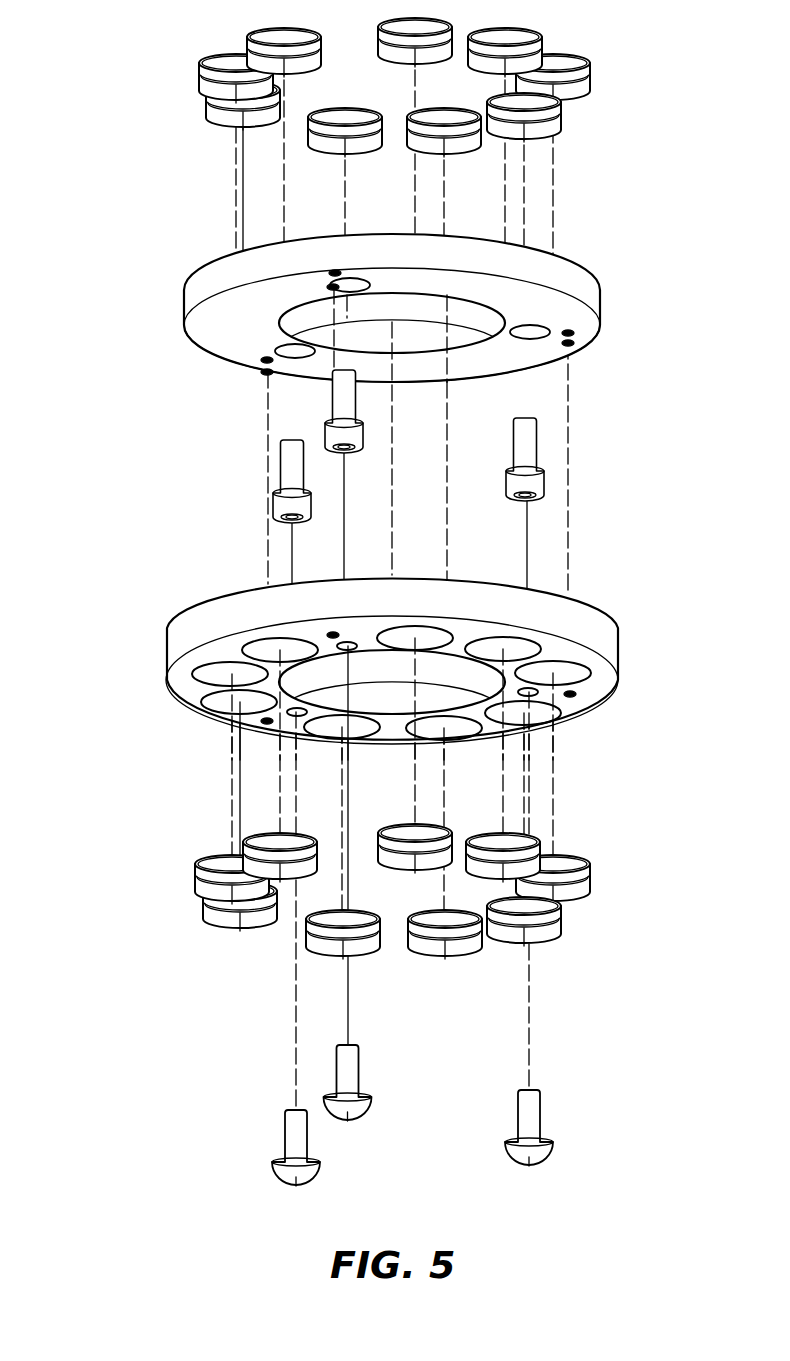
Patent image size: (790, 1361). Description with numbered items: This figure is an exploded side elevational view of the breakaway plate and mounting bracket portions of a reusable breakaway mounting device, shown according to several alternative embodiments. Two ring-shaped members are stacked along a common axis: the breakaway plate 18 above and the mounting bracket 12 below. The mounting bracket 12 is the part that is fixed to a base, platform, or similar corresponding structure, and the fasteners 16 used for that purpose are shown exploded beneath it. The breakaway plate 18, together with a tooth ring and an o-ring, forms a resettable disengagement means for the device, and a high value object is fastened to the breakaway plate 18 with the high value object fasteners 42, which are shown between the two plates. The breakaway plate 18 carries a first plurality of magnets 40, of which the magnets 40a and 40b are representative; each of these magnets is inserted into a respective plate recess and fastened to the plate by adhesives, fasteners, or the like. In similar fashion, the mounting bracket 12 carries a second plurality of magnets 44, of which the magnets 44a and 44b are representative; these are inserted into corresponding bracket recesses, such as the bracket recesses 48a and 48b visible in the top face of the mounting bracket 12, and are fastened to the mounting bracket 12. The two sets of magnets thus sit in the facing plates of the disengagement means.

The mounting bracket 12 is at (366, 669).
The fasteners 16 is at (540, 1108).
The breakaway plate 18 is at (568, 272).
The first plurality of magnets 40 is at (397, 87).
The magnet 40a is at (208, 72).
The magnet 40b is at (260, 43).
The high value object fasteners 42 is at (528, 431).
The second plurality of magnets 44 is at (403, 915).
The magnet 44a is at (223, 892).
The magnet 44b is at (268, 847).
The bracket recess 48a is at (222, 672).
The bracket recess 48b is at (245, 650).